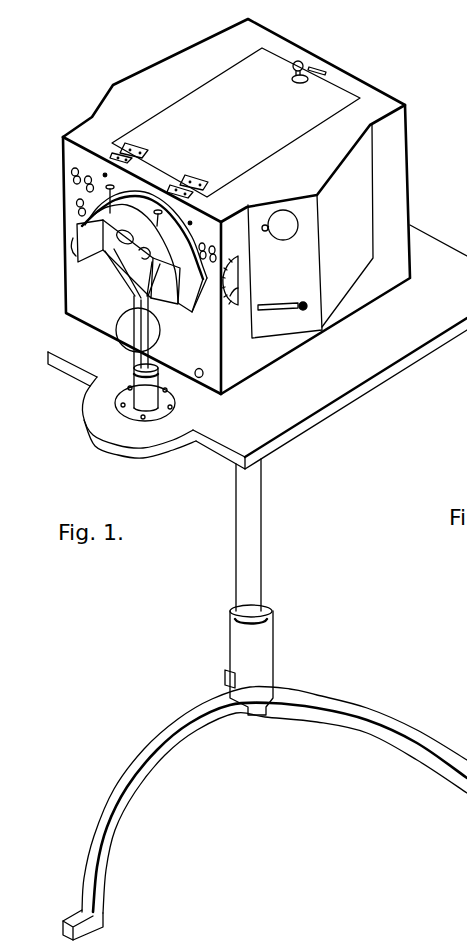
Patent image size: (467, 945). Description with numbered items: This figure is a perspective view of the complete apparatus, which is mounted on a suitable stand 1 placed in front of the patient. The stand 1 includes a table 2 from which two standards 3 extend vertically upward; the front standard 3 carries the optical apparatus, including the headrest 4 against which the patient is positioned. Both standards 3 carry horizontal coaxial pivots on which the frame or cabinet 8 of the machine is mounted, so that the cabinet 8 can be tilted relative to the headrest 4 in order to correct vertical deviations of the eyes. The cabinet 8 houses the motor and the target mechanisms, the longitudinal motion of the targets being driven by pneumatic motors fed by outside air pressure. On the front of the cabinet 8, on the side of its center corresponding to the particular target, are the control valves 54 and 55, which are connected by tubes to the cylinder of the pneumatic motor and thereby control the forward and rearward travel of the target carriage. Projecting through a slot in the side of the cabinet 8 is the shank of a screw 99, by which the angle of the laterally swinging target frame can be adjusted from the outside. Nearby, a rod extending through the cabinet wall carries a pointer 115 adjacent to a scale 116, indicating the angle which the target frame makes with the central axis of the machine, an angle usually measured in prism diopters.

The stand 1 is at (262, 542).
The table 2 is at (257, 347).
The standard 3 is at (138, 383).
The headrest 4 is at (139, 251).
The cabinet 8 is at (236, 206).
The control valve 54 is at (72, 174).
The control valve 55 is at (85, 193).
The screw 99 is at (305, 304).
The pointer 115 is at (236, 283).
The scale 116 is at (234, 302).